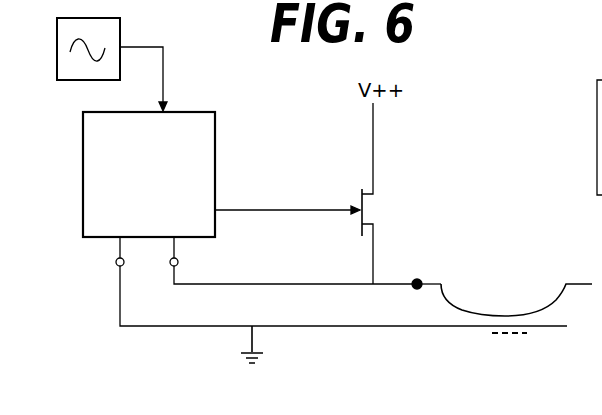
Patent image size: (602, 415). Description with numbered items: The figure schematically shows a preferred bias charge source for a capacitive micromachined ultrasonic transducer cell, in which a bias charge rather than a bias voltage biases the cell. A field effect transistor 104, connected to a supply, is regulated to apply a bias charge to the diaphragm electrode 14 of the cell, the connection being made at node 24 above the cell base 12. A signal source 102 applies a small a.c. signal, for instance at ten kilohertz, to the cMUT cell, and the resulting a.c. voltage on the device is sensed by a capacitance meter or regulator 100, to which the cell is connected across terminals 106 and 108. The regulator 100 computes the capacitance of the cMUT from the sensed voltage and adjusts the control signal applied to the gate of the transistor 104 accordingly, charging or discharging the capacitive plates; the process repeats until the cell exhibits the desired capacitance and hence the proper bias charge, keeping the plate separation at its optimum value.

The signal source 102 is at (110, 35).
The capacitance meter or regulator 100 is at (203, 127).
The field effect transistor 104 is at (361, 193).
The terminal 106 is at (180, 262).
The terminal 108 is at (115, 262).
The node / electrode connection 24 is at (418, 280).
The diaphragm electrode 14 is at (547, 300).
The substrate 12 is at (533, 327).